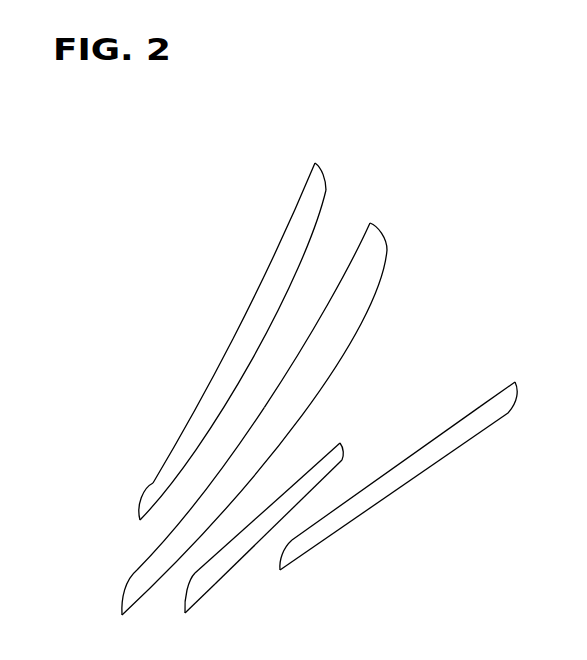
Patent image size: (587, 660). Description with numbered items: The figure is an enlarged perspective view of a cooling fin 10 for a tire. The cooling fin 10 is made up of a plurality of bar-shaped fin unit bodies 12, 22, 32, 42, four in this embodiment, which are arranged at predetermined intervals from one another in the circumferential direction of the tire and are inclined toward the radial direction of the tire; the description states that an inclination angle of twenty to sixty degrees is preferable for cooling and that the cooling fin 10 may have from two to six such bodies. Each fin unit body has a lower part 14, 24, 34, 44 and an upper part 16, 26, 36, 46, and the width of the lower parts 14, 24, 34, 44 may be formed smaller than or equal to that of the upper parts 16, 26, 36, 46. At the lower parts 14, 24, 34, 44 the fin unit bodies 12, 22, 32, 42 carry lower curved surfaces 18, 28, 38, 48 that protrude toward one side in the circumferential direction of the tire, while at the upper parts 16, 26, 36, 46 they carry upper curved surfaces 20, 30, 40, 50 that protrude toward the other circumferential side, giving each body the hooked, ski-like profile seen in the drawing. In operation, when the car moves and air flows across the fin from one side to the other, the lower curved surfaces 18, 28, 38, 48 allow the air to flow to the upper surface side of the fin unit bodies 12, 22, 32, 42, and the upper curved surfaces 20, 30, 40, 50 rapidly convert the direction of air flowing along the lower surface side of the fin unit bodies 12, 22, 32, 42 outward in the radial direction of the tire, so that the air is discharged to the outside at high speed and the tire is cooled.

The cooling fin 10 is at (212, 162).
The fin unit body 12 is at (238, 343).
The lower part 14 is at (153, 482).
The upper part 16 is at (302, 195).
The lower curved surface 18 is at (138, 505).
The upper curved surface 20 is at (324, 181).
The fin unit body 22 is at (298, 366).
The lower part 24 is at (141, 572).
The upper part 26 is at (366, 251).
The lower curved surface 28 is at (122, 604).
The upper curved surface 30 is at (386, 245).
The fin unit body 32 is at (273, 504).
The lower part 34 is at (192, 600).
The upper part 36 is at (328, 456).
The lower curved surface 38 is at (186, 612).
The upper curved surface 40 is at (342, 450).
The fin unit body 42 is at (443, 435).
The lower part 44 is at (303, 537).
The upper part 46 is at (502, 400).
The lower curved surface 48 is at (283, 553).
The upper curved surface 50 is at (517, 402).